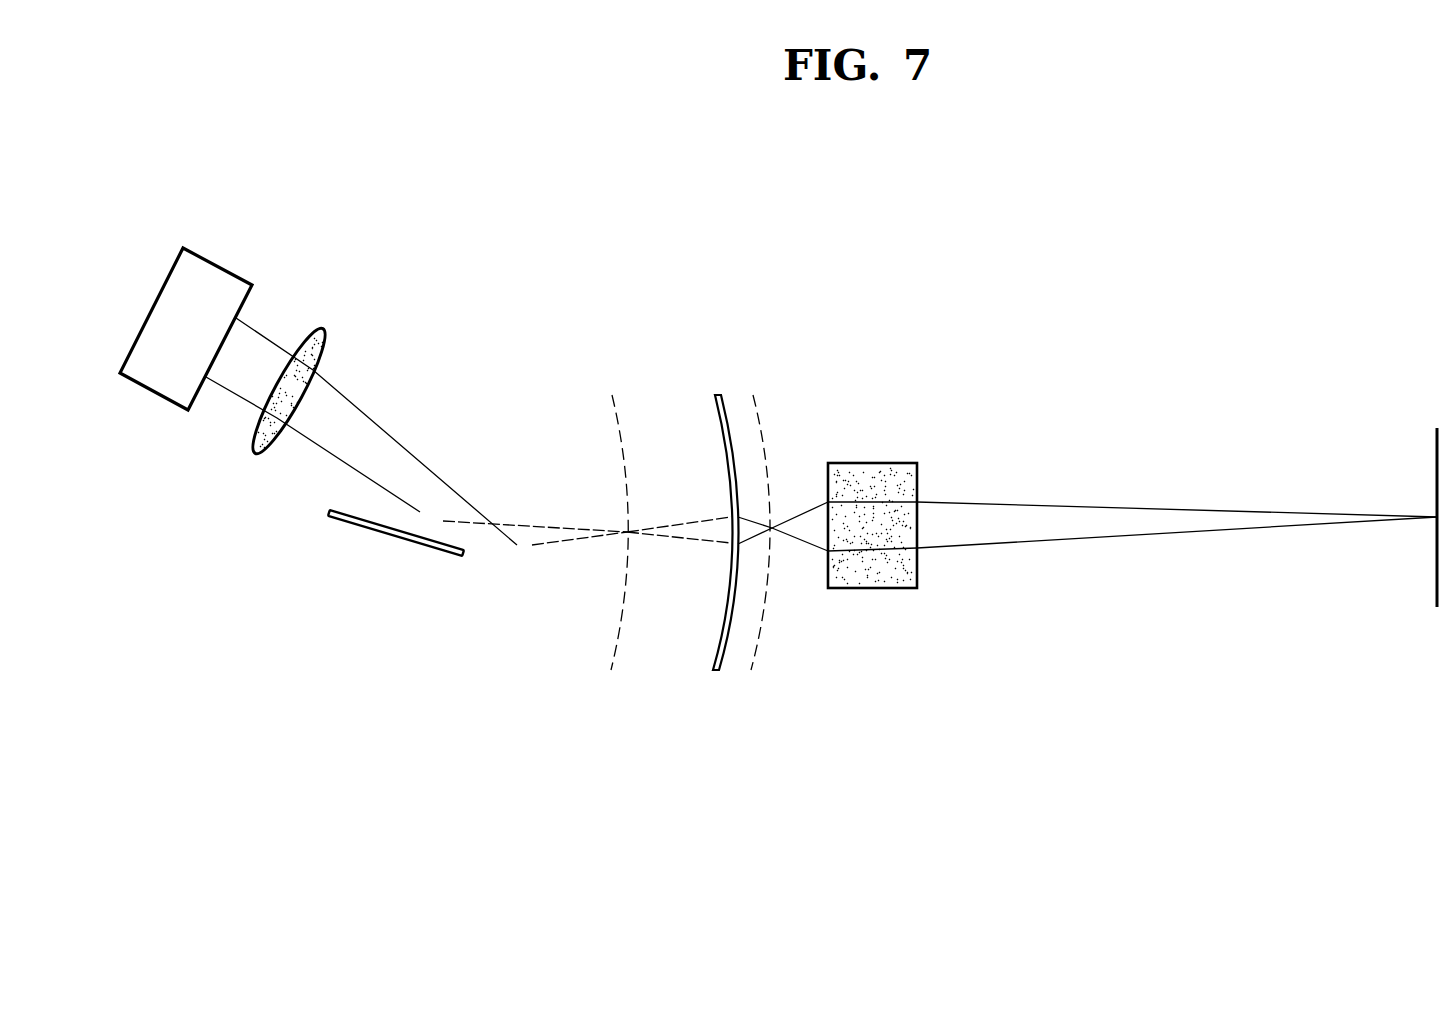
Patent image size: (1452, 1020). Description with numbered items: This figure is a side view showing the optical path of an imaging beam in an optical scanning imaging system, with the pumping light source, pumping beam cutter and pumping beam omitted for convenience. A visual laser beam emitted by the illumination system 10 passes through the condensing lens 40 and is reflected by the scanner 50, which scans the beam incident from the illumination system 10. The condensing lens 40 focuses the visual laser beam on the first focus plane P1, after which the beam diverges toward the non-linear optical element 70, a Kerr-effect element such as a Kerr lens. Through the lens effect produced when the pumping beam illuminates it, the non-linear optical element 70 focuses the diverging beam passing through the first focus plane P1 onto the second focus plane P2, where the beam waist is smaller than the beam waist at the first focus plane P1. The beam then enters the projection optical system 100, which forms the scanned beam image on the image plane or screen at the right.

The illumination system 10 is at (152, 376).
The condensing lens 40 is at (320, 340).
The scanner 50 is at (391, 517).
The non-linear optical element 70 is at (716, 595).
The projection optical system 100 is at (873, 582).
The first focus plane P1 is at (627, 532).
The second focus plane P2 is at (772, 528).